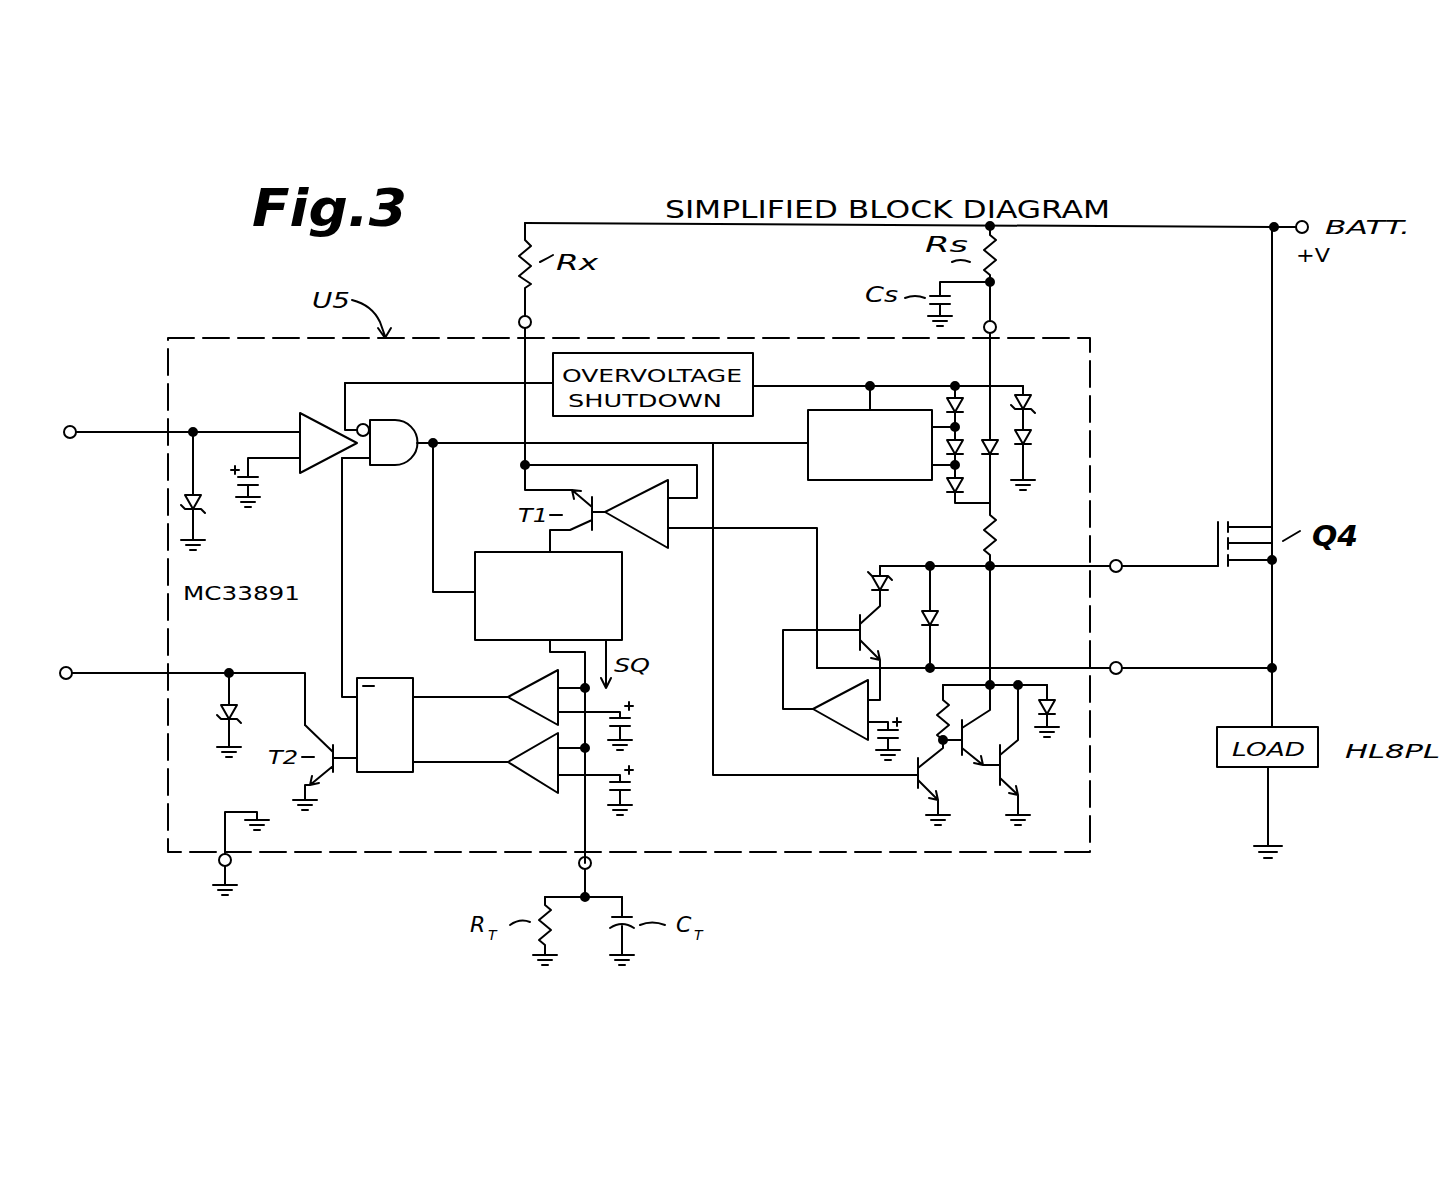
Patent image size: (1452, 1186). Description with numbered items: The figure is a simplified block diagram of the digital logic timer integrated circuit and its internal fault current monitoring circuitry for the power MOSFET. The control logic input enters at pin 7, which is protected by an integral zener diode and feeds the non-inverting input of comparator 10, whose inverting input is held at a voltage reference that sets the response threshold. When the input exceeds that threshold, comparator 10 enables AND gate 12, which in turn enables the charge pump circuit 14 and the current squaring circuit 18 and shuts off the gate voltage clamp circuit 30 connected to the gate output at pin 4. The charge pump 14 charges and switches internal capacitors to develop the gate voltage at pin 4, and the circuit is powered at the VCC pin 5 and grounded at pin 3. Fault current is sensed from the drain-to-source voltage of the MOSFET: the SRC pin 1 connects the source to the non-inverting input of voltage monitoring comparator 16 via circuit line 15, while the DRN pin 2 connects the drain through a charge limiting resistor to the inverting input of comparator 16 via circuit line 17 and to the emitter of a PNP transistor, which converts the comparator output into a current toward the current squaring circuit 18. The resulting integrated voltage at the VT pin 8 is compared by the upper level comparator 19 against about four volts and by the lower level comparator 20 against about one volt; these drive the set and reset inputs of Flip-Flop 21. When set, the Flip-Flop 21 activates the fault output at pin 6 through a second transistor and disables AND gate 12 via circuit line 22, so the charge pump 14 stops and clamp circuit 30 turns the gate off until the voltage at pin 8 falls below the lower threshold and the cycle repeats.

The SRC pin 1 is at (1151, 672).
The DRN pin 2 is at (544, 326).
The GND pin 3 is at (247, 864).
The gate output pin 4 is at (1153, 570).
The VCC pin 5 is at (1011, 328).
The fault output pin 6 is at (108, 672).
The control logic input pin 7 is at (113, 432).
The VT pin 8 is at (586, 872).
The comparator 10 is at (317, 415).
The AND gate 12 is at (432, 405).
The charge pump circuit 14 is at (843, 487).
The circuit line 15 is at (817, 575).
The voltage monitoring comparator 16 is at (650, 495).
The circuit line 17 is at (525, 415).
The current squaring circuit 18 is at (628, 610).
The upper level comparator 19 is at (522, 680).
The lower level comparator 20 is at (522, 778).
The Flip-Flop 21 is at (357, 775).
The circuit line 22 is at (345, 556).
The gate voltage clamp circuit 30 is at (911, 810).